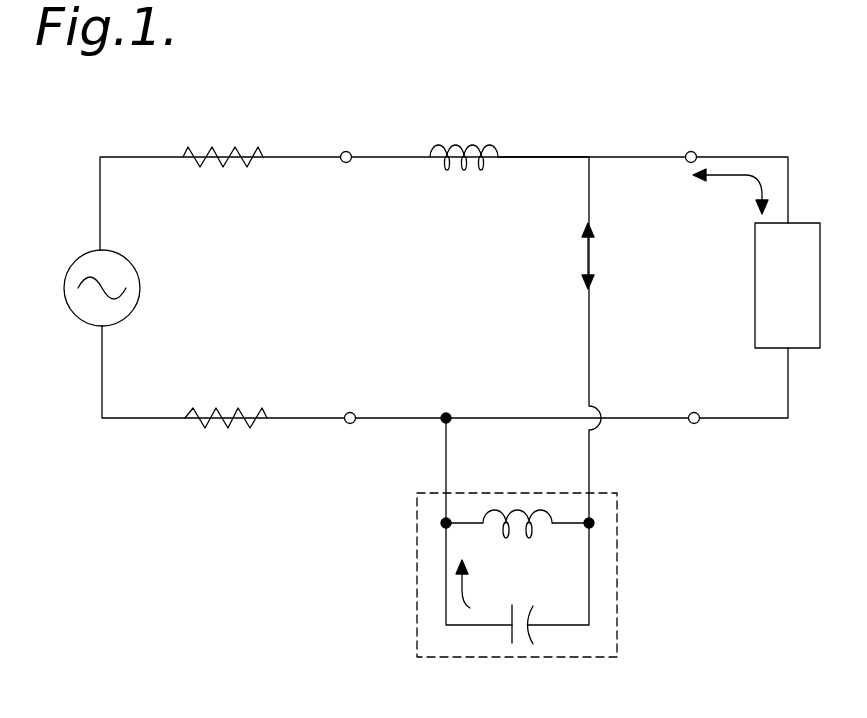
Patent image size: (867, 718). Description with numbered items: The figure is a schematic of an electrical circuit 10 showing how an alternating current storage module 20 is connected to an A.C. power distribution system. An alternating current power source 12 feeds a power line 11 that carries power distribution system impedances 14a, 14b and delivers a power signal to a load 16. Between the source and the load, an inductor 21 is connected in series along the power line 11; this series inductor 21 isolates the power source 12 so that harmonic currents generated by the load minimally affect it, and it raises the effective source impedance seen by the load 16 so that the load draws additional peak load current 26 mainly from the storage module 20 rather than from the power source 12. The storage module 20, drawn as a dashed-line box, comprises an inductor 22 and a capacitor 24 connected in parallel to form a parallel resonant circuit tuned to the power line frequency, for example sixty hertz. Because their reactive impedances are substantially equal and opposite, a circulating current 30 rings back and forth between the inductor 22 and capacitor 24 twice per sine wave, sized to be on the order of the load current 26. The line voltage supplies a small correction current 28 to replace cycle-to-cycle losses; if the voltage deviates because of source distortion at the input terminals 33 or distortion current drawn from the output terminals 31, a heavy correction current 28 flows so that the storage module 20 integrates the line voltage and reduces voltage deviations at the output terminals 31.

The electrical circuit 10 is at (665, 452).
The power line 11 is at (542, 156).
The alternating current power source 12 is at (64, 302).
The power distribution system impedance 14a is at (230, 148).
The power distribution system impedance 14b is at (230, 427).
The load 16 is at (780, 287).
The alternating current storage module 20 is at (408, 550).
The series inductor 21 is at (470, 145).
The inductor 22 is at (532, 512).
The capacitor 24 is at (518, 636).
The load current 26 is at (762, 175).
The correction current 28 is at (557, 270).
The circulating current 30 is at (494, 608).
The output terminals 31 is at (691, 151).
The input terminals 33 is at (347, 163).